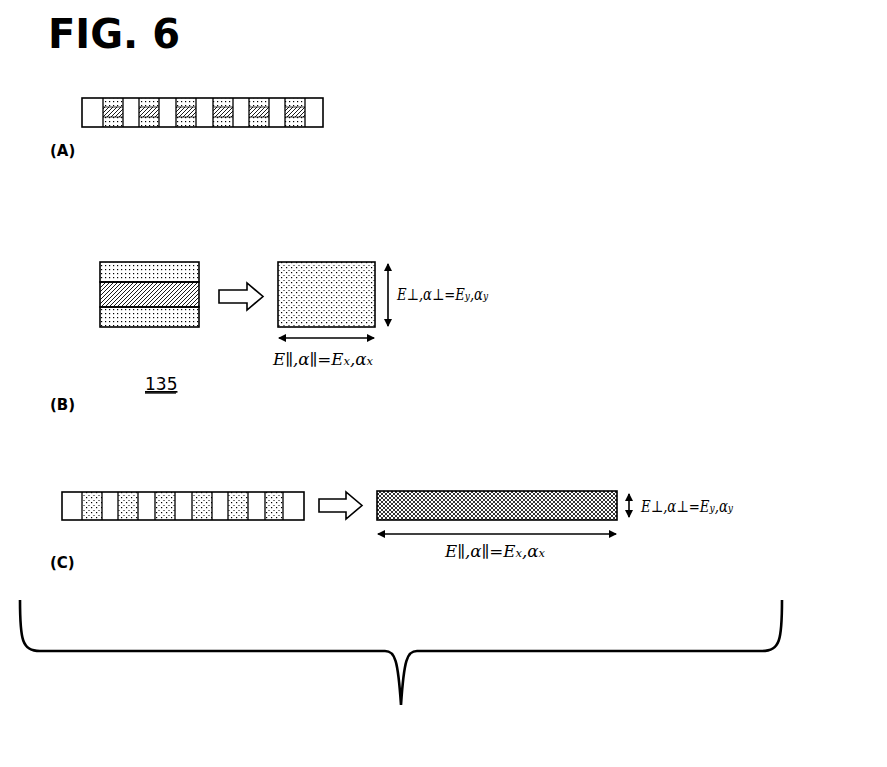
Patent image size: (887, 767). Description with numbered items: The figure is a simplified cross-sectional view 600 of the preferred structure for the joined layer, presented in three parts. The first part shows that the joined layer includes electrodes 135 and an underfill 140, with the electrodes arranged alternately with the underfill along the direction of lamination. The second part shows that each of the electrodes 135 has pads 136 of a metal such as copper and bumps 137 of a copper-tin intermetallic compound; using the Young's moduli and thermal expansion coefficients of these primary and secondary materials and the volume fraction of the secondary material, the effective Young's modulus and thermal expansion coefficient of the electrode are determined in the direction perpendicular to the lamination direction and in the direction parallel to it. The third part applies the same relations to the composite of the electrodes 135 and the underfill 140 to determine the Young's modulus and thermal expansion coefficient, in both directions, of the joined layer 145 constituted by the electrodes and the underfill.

The electrodes 135 is at (303, 98).
The pads 136 is at (100, 271).
The bumps 137 is at (100, 296).
The underfill 140 is at (323, 112).
The joined layer 145 is at (493, 491).
The simplified cross-sectional view 600 is at (401, 671).